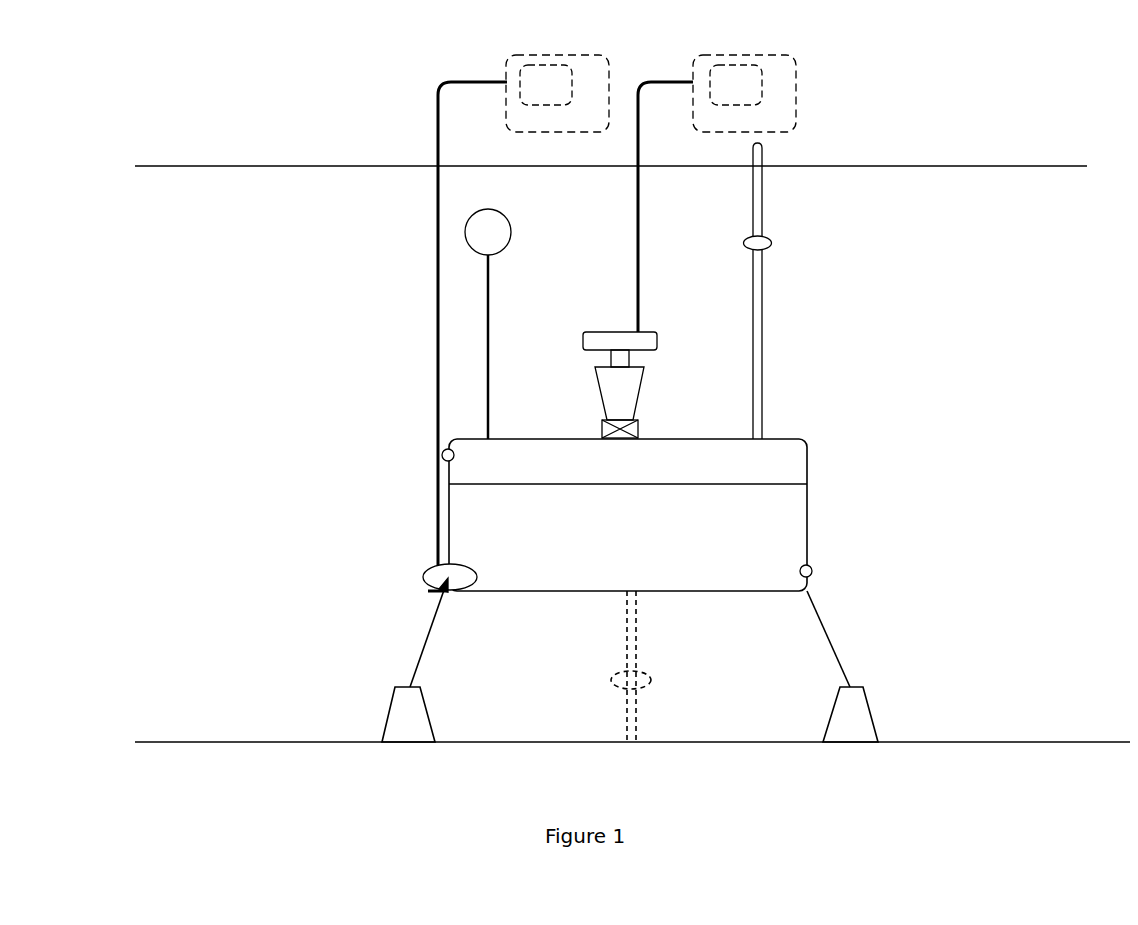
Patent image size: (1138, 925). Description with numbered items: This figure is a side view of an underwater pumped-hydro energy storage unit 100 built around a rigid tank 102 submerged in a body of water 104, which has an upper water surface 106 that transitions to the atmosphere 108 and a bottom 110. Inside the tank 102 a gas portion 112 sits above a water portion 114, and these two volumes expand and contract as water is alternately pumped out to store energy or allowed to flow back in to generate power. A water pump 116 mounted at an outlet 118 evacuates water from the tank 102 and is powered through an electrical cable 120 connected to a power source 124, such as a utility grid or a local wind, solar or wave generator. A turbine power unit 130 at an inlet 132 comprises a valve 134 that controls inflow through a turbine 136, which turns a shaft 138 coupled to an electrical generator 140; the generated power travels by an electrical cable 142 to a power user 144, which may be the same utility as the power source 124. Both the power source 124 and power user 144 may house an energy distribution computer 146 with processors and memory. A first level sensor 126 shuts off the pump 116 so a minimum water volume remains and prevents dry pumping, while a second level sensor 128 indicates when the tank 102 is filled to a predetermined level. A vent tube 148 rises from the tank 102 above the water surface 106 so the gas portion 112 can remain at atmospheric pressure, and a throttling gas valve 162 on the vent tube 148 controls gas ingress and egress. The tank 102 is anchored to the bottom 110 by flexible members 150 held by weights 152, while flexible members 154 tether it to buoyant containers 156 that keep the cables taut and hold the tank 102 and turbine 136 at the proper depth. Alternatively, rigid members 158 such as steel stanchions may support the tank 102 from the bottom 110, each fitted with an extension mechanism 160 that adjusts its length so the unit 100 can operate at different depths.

The underwater pumped-hydro energy storage unit 100 is at (63, 57).
The tank 102 is at (776, 438).
The body of water 104 is at (927, 287).
The upper water surface 106 is at (960, 166).
The atmosphere 108 is at (909, 60).
The bottom 110 is at (1000, 741).
The gas portion 112 is at (796, 465).
The water portion 114 is at (798, 548).
The water pump 116 is at (430, 566).
The outlet 118 is at (447, 592).
The electrical cable 120 is at (438, 356).
The power source 124 is at (538, 53).
The first level sensor 126 is at (812, 567).
The second level sensor 128 is at (443, 452).
The turbine power unit 130 is at (602, 305).
The inlet 132 is at (611, 445).
The valve 134 is at (640, 430).
The turbine 136 is at (638, 402).
The shaft 138 is at (602, 352).
The electrical generator 140 is at (650, 331).
The electrical cable 142 is at (640, 263).
The power user 144 is at (726, 53).
The energy distribution computer 146 is at (532, 85).
The vent tube 148 is at (764, 315).
The flexible members 150 is at (836, 640).
The weights 152 is at (875, 722).
The flexible members 154 is at (491, 356).
The buoyant containers 156 is at (511, 232).
The rigid members 158 is at (640, 722).
The extension mechanism 160 is at (652, 680).
The throttling gas valve 162 is at (772, 243).